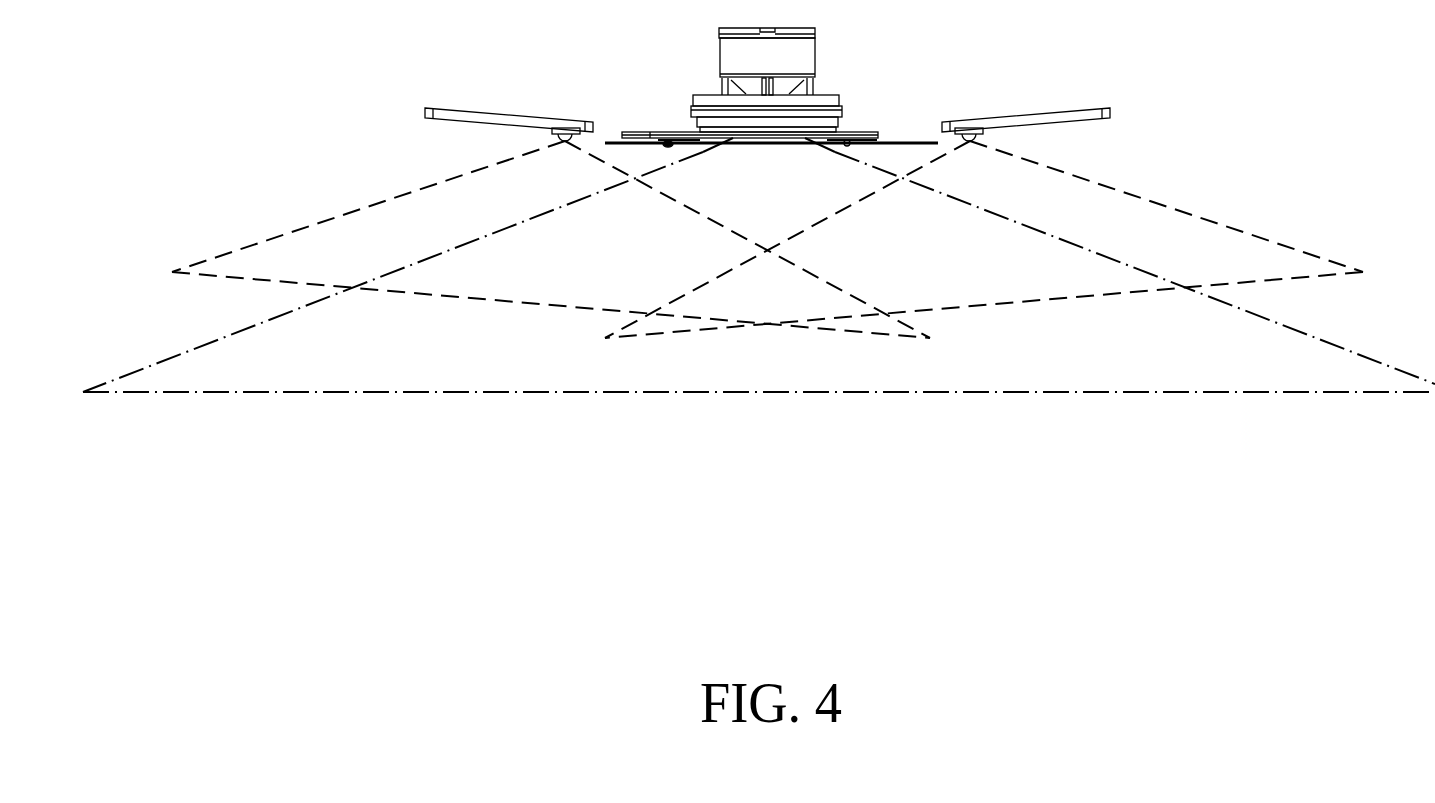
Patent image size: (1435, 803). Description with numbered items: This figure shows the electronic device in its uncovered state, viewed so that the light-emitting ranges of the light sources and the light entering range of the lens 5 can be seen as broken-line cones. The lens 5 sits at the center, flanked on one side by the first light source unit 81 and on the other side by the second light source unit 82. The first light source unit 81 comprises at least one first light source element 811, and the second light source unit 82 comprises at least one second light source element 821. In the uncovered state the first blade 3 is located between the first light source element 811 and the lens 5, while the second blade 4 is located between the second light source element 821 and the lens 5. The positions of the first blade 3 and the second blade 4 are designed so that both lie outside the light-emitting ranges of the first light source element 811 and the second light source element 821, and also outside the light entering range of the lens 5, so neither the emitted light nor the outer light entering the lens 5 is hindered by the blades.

The first blade 3 is at (890, 142).
The second blade 4 is at (645, 141).
The lens 5 is at (838, 120).
The first light source unit 81 is at (1112, 104).
The first light source element 811 is at (968, 128).
The second light source unit 82 is at (423, 104).
The second light source element 821 is at (565, 128).